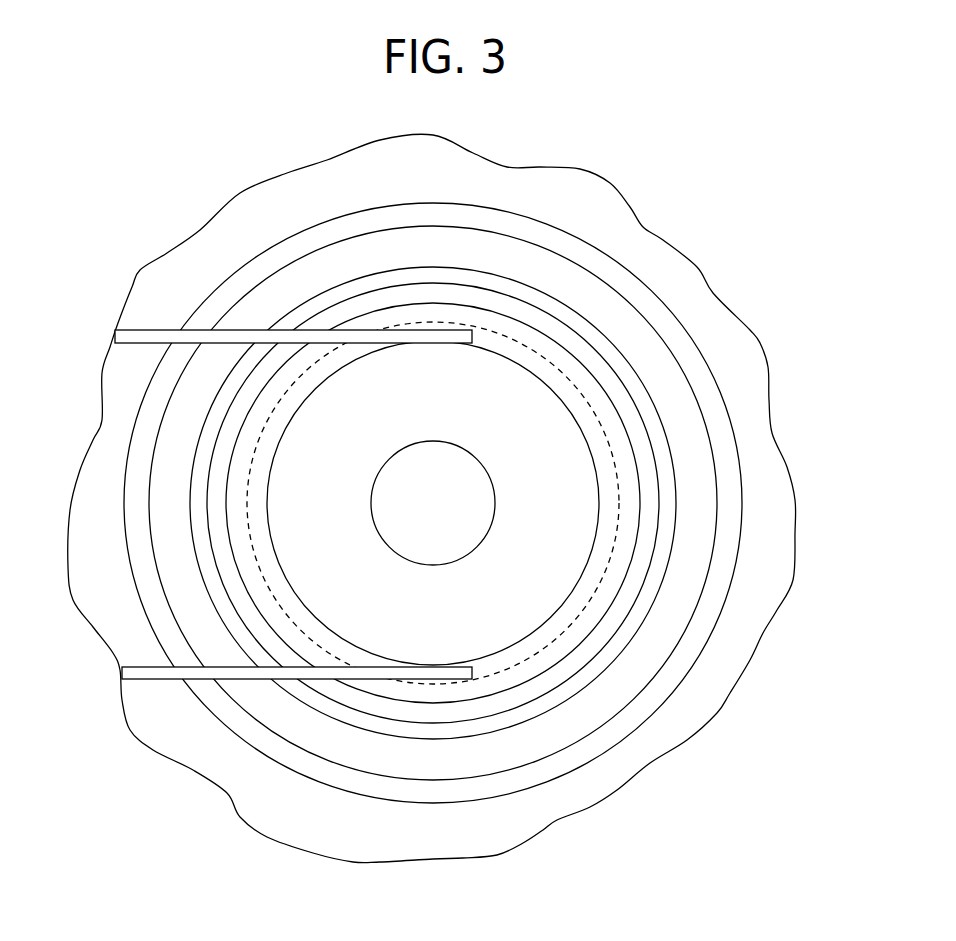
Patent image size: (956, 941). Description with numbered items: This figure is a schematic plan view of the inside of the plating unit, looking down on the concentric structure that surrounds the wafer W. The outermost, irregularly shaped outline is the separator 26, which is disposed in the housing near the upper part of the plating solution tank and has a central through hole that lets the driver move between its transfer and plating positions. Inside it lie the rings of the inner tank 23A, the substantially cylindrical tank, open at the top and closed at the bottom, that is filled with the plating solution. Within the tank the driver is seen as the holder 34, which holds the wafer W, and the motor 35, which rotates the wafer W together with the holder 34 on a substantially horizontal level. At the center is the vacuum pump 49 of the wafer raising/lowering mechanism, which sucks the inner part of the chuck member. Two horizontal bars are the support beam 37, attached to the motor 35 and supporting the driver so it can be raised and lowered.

The separator 26 is at (750, 395).
The inner tank 23A is at (687, 432).
The holder 34 is at (638, 542).
The wafer W is at (607, 573).
The motor 35 is at (543, 593).
The vacuum pump 49 is at (452, 543).
The support beam 37 is at (117, 333).